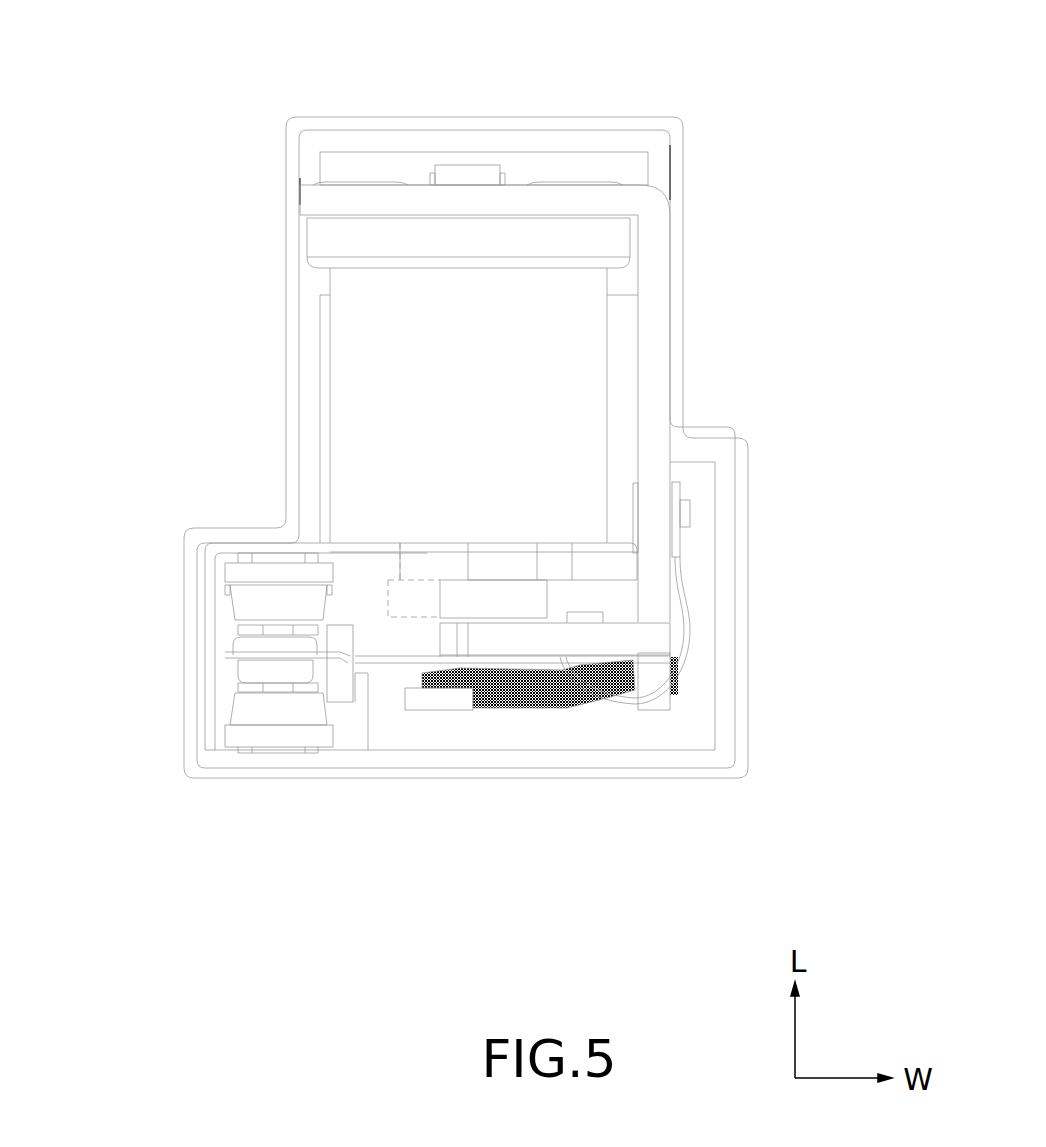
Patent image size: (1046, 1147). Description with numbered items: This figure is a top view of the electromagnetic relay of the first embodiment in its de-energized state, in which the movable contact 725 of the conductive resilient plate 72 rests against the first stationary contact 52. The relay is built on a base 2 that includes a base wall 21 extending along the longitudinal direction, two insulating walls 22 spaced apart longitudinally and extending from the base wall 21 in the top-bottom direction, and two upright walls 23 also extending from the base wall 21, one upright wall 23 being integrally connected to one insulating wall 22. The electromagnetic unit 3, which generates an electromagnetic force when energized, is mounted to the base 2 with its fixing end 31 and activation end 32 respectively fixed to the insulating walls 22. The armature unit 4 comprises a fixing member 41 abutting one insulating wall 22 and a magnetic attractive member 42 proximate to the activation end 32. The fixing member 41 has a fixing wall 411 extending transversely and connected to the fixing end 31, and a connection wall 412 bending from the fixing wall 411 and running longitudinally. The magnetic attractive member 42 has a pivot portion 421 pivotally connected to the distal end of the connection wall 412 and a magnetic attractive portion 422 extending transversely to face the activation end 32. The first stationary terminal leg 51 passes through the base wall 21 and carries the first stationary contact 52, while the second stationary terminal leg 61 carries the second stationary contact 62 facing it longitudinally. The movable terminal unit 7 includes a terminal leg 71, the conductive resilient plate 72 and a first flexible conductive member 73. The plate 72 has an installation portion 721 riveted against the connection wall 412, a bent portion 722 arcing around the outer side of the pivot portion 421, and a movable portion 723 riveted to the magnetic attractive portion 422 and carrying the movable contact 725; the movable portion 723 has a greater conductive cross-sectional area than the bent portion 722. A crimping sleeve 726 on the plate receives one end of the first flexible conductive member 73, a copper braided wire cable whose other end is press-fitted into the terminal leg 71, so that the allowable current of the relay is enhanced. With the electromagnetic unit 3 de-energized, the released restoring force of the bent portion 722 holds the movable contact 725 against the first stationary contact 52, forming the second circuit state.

The base 2 is at (558, 447).
The base wall 21 is at (766, 444).
The insulating walls 22 is at (322, 239).
The upright walls 23 is at (228, 548).
The electromagnetic unit 3 is at (615, 360).
The fixing end 31 is at (467, 177).
The activation end 32 is at (535, 598).
The armature unit 4 is at (538, 540).
The fixing member 41 is at (560, 317).
The fixing wall 411 is at (562, 197).
The connection wall 412 is at (658, 413).
The magnetic attractive member 42 is at (526, 527).
The pivot portion 421 is at (653, 637).
The magnetic attractive portion 422 is at (487, 643).
The first stationary terminal leg 51 is at (320, 735).
The first stationary contact 52 is at (283, 713).
The second stationary terminal leg 61 is at (237, 577).
The second stationary contact 62 is at (248, 605).
The movable terminal unit 7 is at (645, 742).
The terminal leg 71 is at (655, 710).
The conductive resilient plate 72 is at (714, 707).
The installation portion 721 is at (677, 572).
The bent portion 722 is at (625, 630).
The movable portion 723 is at (337, 660).
The movable contact 725 is at (243, 668).
The crimping sleeve 726 is at (440, 710).
The first flexible conductive member 73 is at (567, 708).